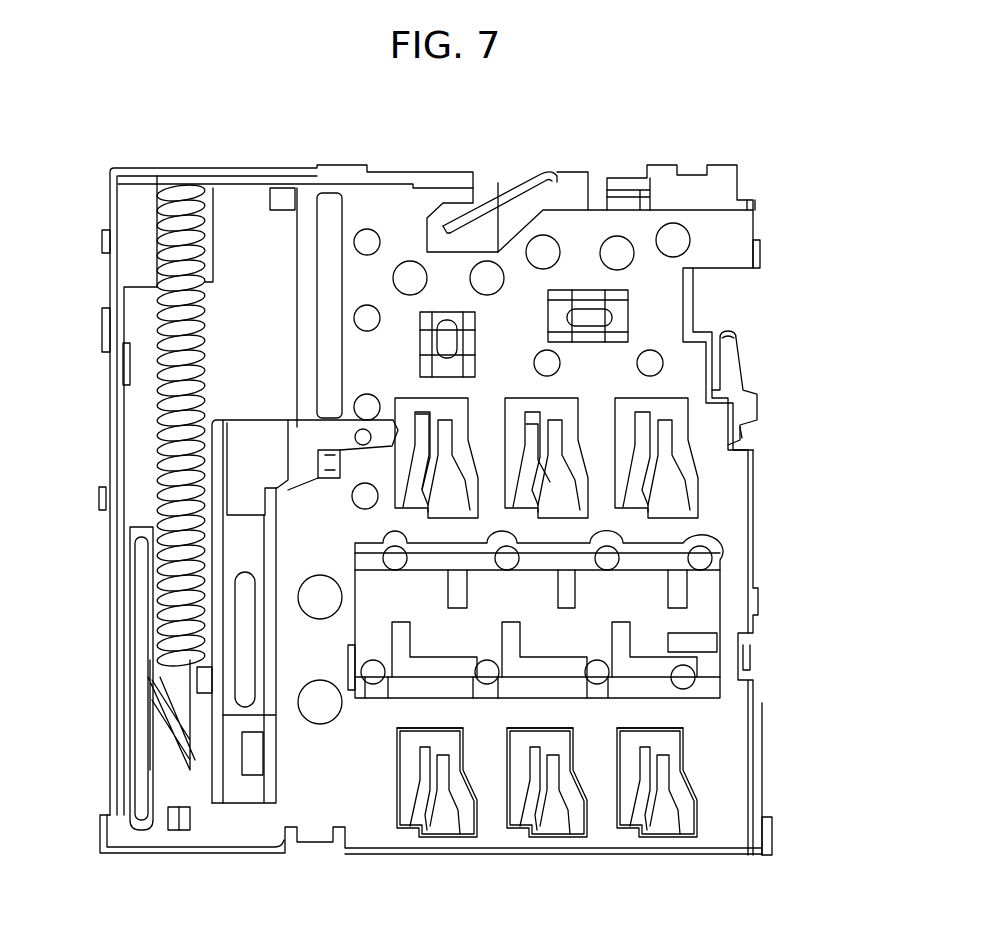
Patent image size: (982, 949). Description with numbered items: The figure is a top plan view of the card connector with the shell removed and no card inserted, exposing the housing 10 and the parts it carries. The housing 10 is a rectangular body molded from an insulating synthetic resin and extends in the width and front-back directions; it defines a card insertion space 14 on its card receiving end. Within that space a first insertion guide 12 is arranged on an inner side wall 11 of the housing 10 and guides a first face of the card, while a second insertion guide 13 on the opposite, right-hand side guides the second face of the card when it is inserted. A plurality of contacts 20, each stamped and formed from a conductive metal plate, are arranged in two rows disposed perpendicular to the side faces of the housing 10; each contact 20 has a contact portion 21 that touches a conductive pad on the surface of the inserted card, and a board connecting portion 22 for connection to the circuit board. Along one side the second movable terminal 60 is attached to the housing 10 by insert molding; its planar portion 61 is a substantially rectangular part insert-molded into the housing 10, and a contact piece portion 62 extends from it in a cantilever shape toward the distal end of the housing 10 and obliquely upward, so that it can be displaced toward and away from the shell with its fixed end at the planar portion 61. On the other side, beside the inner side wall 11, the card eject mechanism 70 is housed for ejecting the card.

The housing 10 is at (376, 872).
The inner side wall 11 is at (197, 850).
The first insertion guide 12 is at (222, 842).
The second insertion guide 13 is at (752, 830).
The card insertion space 14 is at (521, 842).
The contact 20 is at (455, 402).
The contact portion 21 is at (422, 410).
The board connecting portion 22 is at (448, 588).
The second movable terminal 60 is at (777, 379).
The planar portion 61 is at (741, 437).
The contact piece portion 62 is at (738, 342).
The card eject mechanism 70 is at (138, 422).